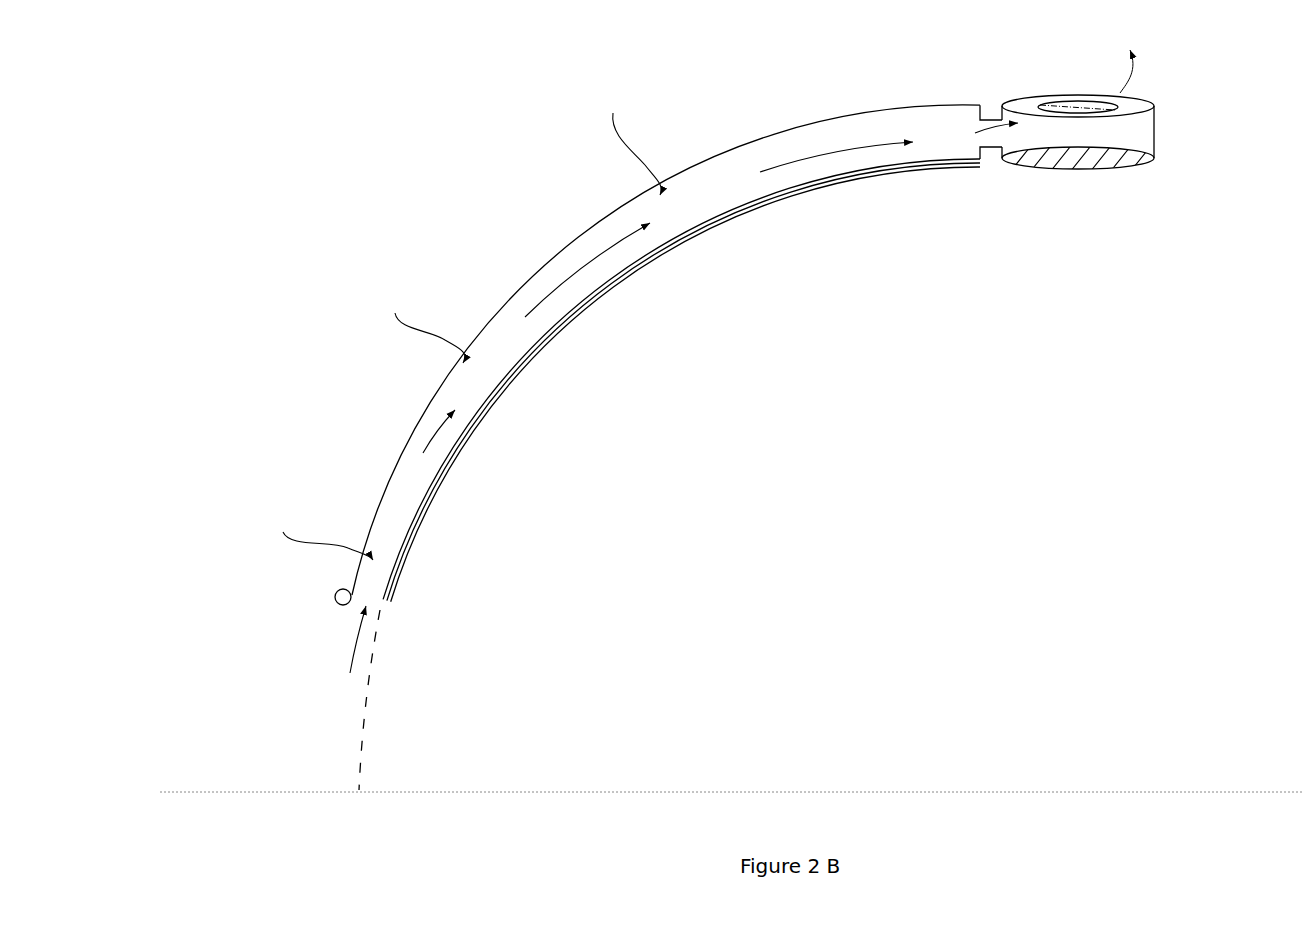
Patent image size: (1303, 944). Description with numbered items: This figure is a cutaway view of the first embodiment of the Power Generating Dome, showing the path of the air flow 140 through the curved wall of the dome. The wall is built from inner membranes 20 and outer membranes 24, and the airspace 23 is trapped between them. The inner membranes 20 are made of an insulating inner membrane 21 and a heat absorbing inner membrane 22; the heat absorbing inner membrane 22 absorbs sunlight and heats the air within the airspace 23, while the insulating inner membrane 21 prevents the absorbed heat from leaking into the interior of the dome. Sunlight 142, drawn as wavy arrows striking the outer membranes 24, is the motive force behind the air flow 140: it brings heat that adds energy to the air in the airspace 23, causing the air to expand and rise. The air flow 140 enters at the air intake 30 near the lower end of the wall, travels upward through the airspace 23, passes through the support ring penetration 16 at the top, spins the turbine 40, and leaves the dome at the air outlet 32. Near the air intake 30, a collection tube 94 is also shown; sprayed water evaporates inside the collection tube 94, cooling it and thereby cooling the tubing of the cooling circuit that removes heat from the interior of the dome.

The support ring penetration 16 is at (994, 116).
The inner membranes 20 is at (821, 219).
The insulating inner membrane 21 is at (594, 308).
The heat absorbing inner membrane 22 is at (692, 243).
The airspace 23 is at (521, 355).
The outer membranes 24 is at (553, 247).
The air intake 30 is at (387, 603).
The air outlet 32 is at (1035, 95).
The turbine 40 is at (1097, 106).
The collection tube 94 is at (333, 595).
The air flow 140 is at (736, 362).
The sunlight 142 is at (453, 324).